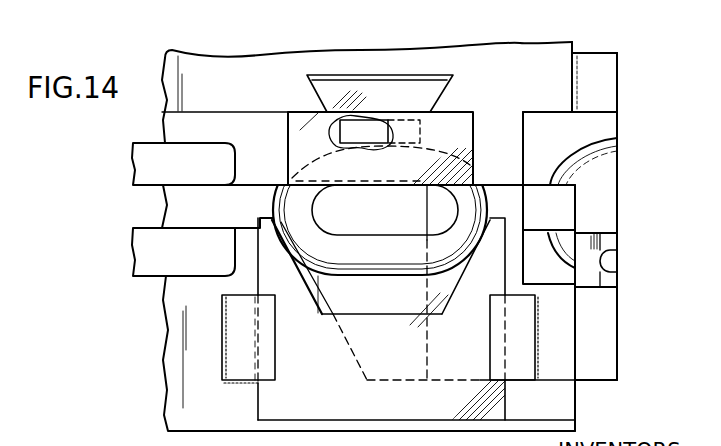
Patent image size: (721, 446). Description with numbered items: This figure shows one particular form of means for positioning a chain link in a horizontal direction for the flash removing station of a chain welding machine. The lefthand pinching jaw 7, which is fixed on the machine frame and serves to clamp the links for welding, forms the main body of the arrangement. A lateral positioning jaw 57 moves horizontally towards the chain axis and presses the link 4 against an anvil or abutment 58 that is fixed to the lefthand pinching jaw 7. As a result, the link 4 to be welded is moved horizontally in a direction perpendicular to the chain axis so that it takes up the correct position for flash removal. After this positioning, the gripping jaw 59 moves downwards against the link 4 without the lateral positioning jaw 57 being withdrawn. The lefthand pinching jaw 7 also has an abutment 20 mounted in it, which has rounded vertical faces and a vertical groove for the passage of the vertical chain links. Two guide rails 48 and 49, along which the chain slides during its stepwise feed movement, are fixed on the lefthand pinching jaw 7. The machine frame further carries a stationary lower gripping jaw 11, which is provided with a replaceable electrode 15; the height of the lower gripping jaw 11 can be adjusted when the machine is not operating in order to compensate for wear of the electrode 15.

The link 4 is at (354, 253).
The lefthand pinching jaw 7 is at (553, 52).
The lower gripping jaw 11 is at (602, 342).
The electrode 15 is at (612, 262).
The abutment 20 is at (537, 126).
The guide rail 48 is at (137, 153).
The guide rail 49 is at (137, 243).
The lateral positioning jaw 57 is at (323, 388).
The anvil or abutment 58 is at (360, 129).
The gripping jaw 59 is at (298, 141).